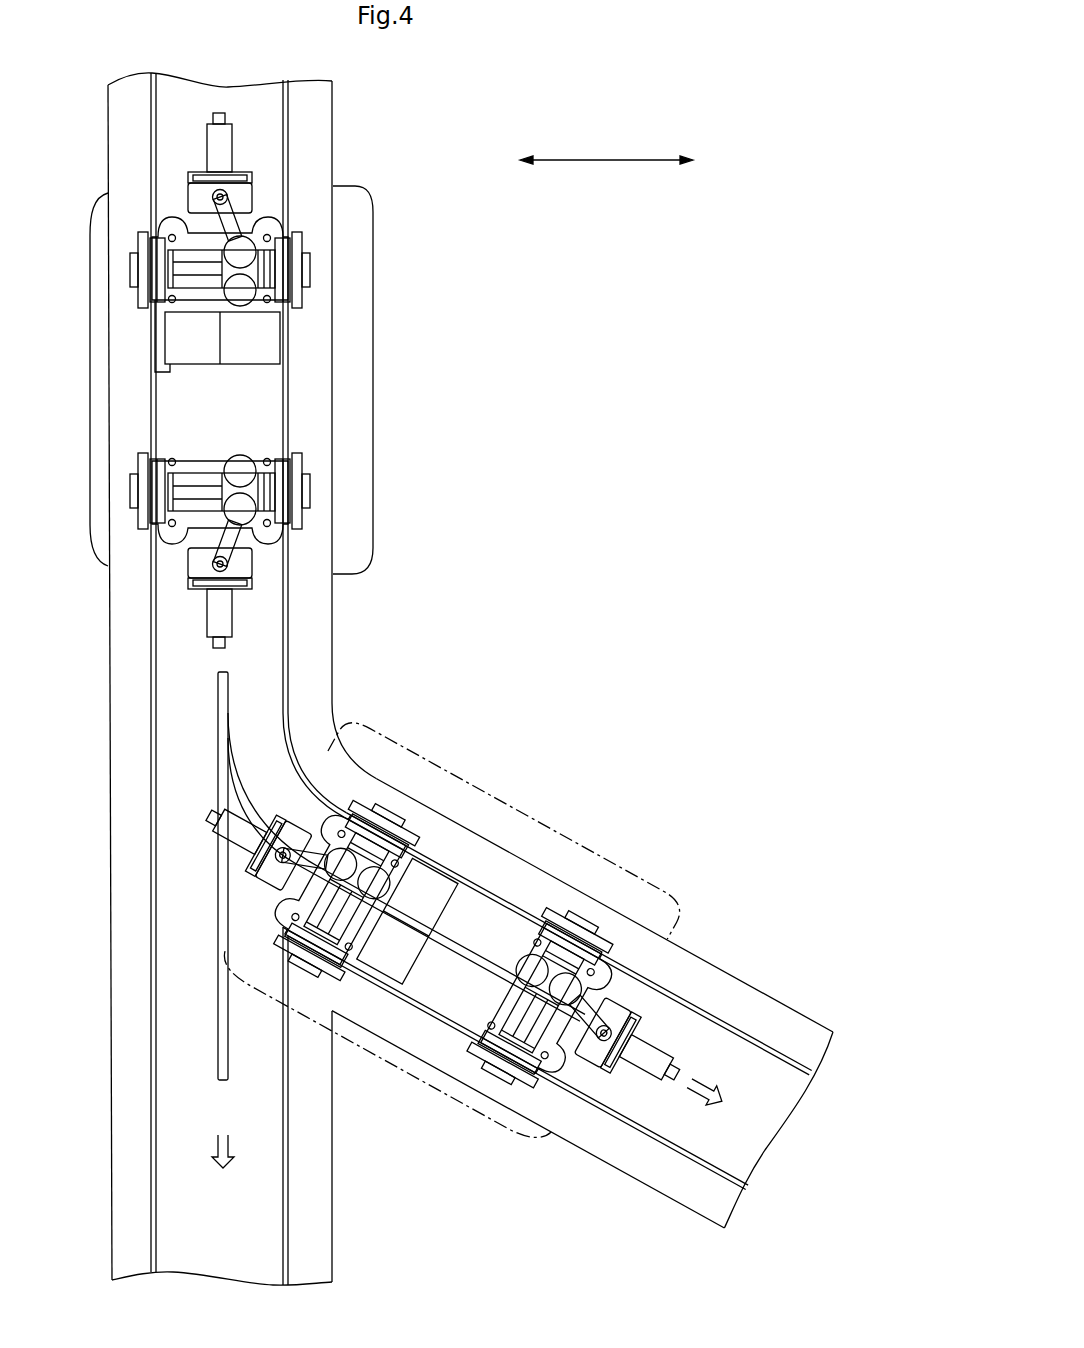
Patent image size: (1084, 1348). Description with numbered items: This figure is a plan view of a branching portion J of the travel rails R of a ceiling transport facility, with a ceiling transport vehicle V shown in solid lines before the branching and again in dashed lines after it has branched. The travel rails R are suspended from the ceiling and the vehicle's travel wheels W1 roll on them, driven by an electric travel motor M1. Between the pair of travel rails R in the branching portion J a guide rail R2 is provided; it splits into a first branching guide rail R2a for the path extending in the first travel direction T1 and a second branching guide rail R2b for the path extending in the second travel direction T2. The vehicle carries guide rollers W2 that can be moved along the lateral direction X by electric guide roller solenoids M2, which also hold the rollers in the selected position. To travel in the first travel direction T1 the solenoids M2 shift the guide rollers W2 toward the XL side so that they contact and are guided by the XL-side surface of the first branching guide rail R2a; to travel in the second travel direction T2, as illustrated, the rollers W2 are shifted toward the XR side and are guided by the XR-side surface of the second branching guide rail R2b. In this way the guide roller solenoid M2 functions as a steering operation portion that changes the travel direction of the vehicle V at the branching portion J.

The travel rails R is at (128, 133).
The branching portion J is at (360, 668).
The guide rail R2 is at (316, 839).
The first branching guide rail R2a is at (217, 950).
The second branching guide rail R2b is at (250, 785).
The ceiling transport vehicle V is at (386, 292).
The travel motor M1 is at (262, 343).
The guide roller solenoid M2 is at (240, 194).
The travel wheels W1 is at (138, 496).
The guide rollers W2 is at (232, 505).
The first travel direction T1 is at (224, 1168).
The second travel direction T2 is at (726, 1101).
The lateral direction X is at (606, 148).
The XL direction XL is at (509, 164).
The XR direction XR is at (705, 164).